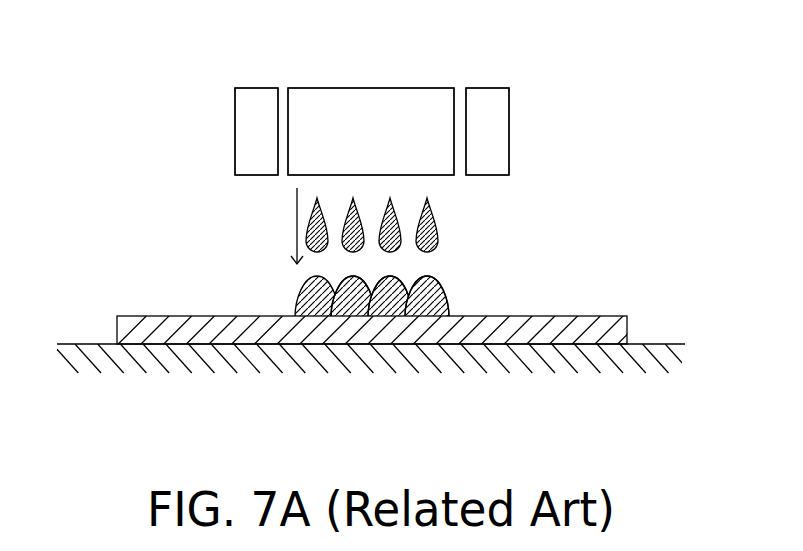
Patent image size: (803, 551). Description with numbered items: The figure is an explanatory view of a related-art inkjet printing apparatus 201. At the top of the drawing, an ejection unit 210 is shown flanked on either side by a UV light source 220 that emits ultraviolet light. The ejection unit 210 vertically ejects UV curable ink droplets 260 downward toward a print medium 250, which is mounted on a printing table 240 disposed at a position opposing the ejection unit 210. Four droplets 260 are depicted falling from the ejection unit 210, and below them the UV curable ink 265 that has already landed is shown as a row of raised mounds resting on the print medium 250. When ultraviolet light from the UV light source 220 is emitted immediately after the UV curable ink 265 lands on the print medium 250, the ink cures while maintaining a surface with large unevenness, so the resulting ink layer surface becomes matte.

The inkjet printing apparatus 201 is at (440, 62).
The ejection unit 210 is at (350, 144).
The UV light source 220 is at (240, 162).
The printing table 240 is at (594, 371).
The print medium 250 is at (587, 320).
The UV curable ink droplets 260 is at (436, 226).
The UV curable ink 265 is at (447, 292).